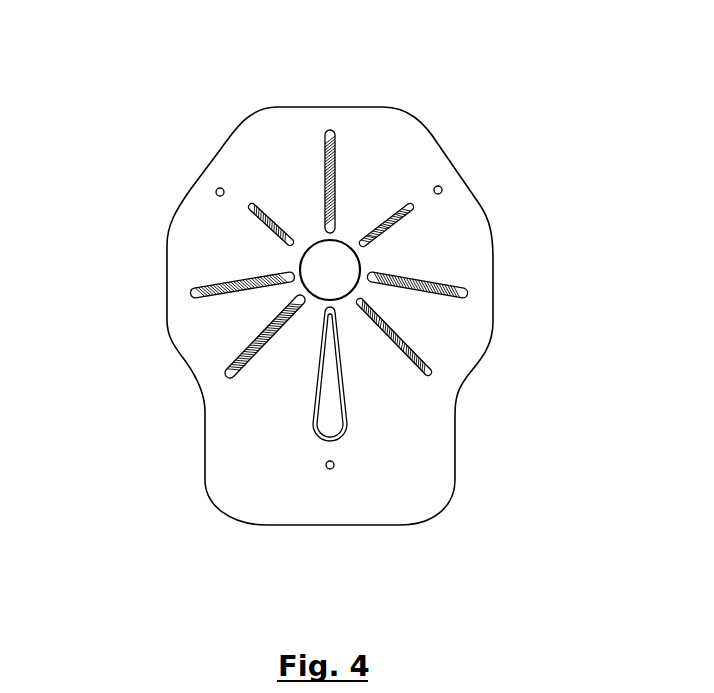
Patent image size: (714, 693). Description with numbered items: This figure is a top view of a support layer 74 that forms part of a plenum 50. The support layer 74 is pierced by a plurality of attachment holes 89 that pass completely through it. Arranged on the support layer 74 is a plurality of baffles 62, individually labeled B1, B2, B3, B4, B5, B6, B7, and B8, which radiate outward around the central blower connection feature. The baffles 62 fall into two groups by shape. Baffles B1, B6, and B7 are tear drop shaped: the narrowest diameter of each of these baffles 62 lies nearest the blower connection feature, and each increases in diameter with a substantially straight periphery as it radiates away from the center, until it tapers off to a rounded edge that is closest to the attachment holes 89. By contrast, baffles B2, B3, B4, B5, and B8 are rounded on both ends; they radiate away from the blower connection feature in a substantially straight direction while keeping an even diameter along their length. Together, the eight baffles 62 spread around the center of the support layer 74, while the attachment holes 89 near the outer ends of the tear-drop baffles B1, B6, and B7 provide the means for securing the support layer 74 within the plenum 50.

The plenum 50 is at (350, 90).
The baffles 62 is at (328, 388).
The support layer 74 is at (273, 478).
The attachment holes 89 is at (443, 188).
The baffle B1 is at (336, 402).
The baffle B2 is at (268, 330).
The baffle B3 is at (405, 340).
The baffle B4 is at (218, 290).
The baffle B5 is at (437, 283).
The baffle B6 is at (252, 208).
The baffle B7 is at (402, 205).
The baffle B8 is at (325, 178).